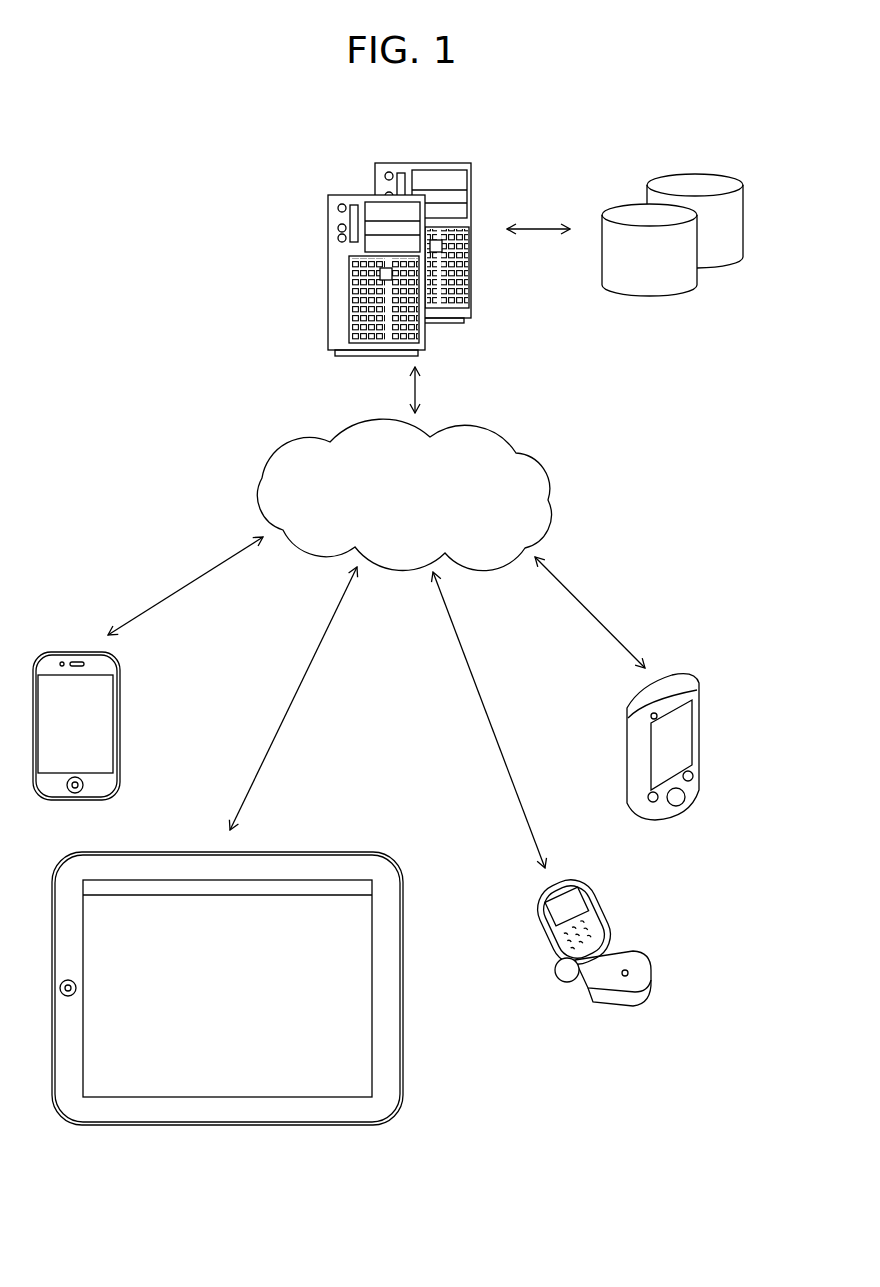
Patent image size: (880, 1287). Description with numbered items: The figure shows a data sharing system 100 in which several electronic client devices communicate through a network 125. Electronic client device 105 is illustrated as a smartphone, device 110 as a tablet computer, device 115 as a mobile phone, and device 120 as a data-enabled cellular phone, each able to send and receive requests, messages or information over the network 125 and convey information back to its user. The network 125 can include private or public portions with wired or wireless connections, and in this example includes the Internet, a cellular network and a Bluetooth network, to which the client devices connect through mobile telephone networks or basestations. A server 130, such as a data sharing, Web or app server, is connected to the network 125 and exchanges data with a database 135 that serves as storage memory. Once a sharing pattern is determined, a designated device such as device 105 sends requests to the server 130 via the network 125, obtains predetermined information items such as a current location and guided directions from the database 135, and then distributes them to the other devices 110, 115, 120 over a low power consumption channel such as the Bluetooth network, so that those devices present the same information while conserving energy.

The data sharing system 100 is at (129, 224).
The electronic client device 105 is at (120, 717).
The electronic client device 110 is at (403, 940).
The electronic client device 115 is at (586, 893).
The electronic client device 120 is at (700, 737).
The network 125 is at (404, 494).
The server 130 is at (327, 336).
The database 135 is at (672, 235).